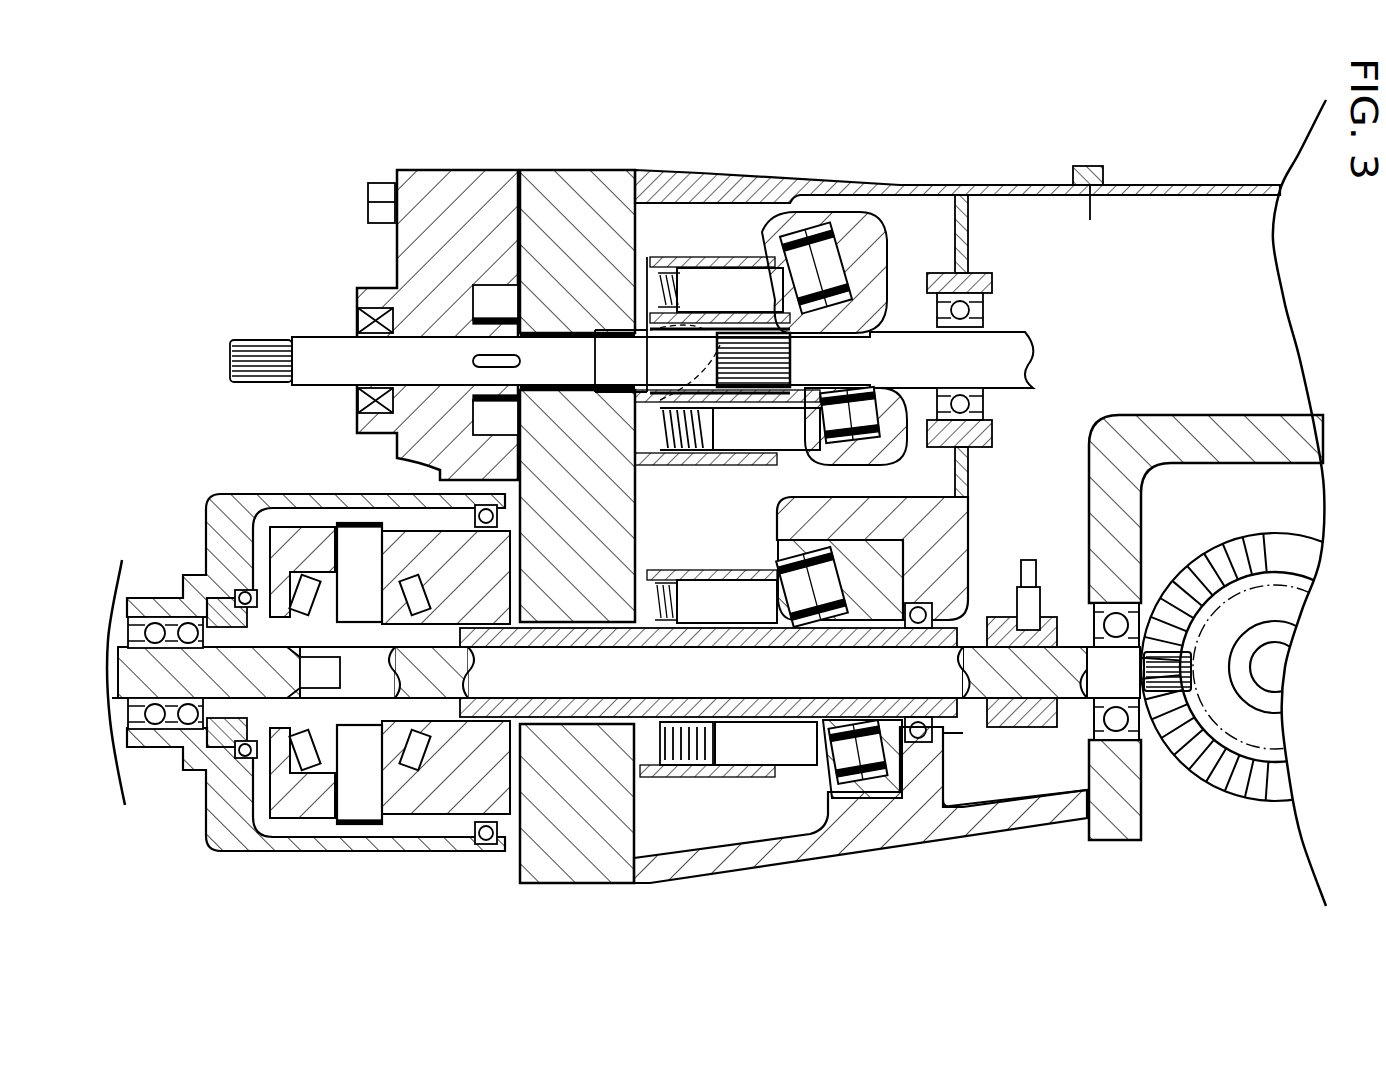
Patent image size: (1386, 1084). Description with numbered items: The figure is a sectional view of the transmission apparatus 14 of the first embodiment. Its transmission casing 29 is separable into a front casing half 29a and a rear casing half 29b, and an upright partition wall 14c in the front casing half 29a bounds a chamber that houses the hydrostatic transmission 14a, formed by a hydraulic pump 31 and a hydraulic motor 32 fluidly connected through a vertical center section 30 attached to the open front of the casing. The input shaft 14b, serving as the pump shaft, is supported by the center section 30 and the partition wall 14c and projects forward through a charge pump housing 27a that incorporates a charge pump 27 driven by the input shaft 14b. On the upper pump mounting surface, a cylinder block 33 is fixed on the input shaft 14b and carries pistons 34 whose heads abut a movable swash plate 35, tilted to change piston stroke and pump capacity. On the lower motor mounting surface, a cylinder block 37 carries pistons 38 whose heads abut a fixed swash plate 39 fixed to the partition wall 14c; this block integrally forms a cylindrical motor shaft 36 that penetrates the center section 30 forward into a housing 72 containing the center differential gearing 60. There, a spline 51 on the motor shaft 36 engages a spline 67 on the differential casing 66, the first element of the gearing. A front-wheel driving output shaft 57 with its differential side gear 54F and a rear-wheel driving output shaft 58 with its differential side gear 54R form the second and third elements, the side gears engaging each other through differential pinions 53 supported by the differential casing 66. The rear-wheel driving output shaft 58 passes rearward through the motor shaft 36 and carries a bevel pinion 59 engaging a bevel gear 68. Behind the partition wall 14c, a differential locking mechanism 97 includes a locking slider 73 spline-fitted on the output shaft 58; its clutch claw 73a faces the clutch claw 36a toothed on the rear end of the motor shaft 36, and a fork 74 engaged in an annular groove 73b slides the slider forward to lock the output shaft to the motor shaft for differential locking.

The transmission apparatus 14 is at (340, 145).
The hydrostatic transmission (HST) 14a is at (893, 222).
The input shaft 14b is at (243, 337).
The partition wall 14c is at (975, 485).
The charge pump 27 is at (492, 285).
The charge pump housing 27a is at (432, 170).
The transmission casing 29 is at (1094, 165).
The front casing half 29a is at (975, 195).
The rear casing half 29b is at (1168, 186).
The center section 30 is at (566, 170).
The hydraulic pump 31 is at (700, 252).
The hydraulic motor 32 is at (710, 805).
The cylinder block 33 is at (676, 466).
The pistons 34 is at (755, 452).
The movable swash plate 35 is at (832, 305).
The motor shaft 36 is at (540, 800).
The clutch claw 36a is at (963, 733).
The cylinder block 37 is at (657, 572).
The pistons 38 is at (725, 590).
The fixed swash plate 39 is at (812, 780).
The spline 51 is at (500, 648).
The differential pinions 53 is at (322, 530).
The differential side gear 54F is at (258, 855).
The differential side gear 54R is at (450, 790).
The front-wheel driving output shaft 57 is at (208, 770).
The rear-wheel driving output shaft 58 is at (645, 686).
The bevel pinion 59 is at (1160, 745).
The center differential gearing 60 is at (242, 500).
The differential casing 66 is at (268, 545).
The spline 67 is at (490, 848).
The bevel gear 68 is at (1228, 795).
The housing 72 is at (206, 520).
The locking slider 73 is at (1043, 625).
The clutch claw 73a is at (1018, 728).
The annular groove 73b is at (1040, 730).
The fork 74 is at (1012, 590).
The differential locking mechanism 97 is at (1045, 540).